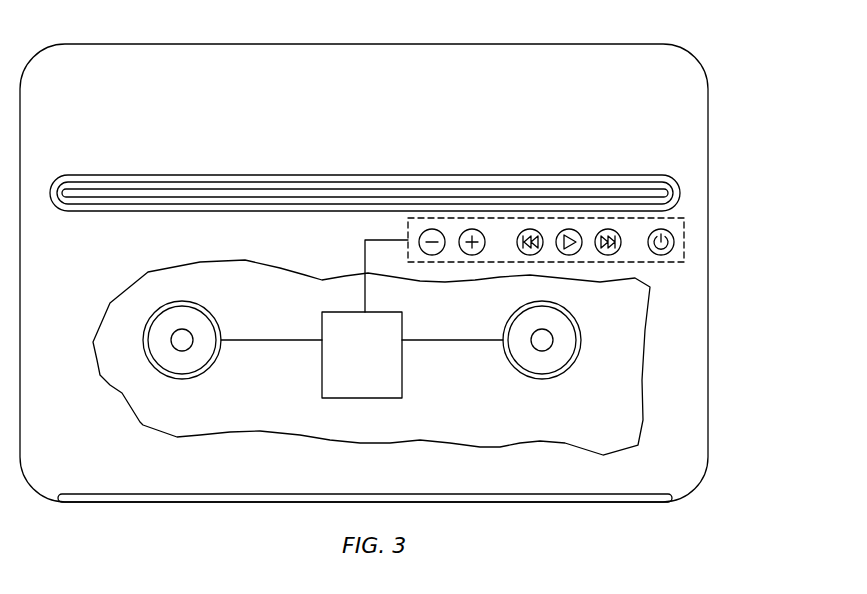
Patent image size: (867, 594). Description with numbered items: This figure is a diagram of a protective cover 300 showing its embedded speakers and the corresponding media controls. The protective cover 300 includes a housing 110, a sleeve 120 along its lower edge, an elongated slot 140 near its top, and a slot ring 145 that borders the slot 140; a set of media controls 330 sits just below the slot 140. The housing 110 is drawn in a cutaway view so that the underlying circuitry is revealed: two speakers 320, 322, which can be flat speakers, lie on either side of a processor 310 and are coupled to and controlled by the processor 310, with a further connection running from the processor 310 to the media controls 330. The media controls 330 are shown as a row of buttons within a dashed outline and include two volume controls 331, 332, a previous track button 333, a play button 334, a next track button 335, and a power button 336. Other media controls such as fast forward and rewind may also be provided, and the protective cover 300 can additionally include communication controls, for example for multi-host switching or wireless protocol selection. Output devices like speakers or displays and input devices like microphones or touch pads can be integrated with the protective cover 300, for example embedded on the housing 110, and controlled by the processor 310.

The protective cover 300 is at (733, 51).
The housing 110 is at (190, 70).
The sleeve 120 is at (578, 511).
The slot 140 is at (590, 193).
The slot ring 145 is at (636, 181).
The processor 310 is at (340, 387).
The speaker 320 is at (172, 330).
The speaker 322 is at (540, 347).
The media controls 330 is at (686, 240).
The volume control 331 is at (427, 229).
The volume control 332 is at (469, 229).
The previous track button 333 is at (527, 229).
The play button 334 is at (568, 229).
The next track button 335 is at (618, 251).
The power button 336 is at (670, 252).